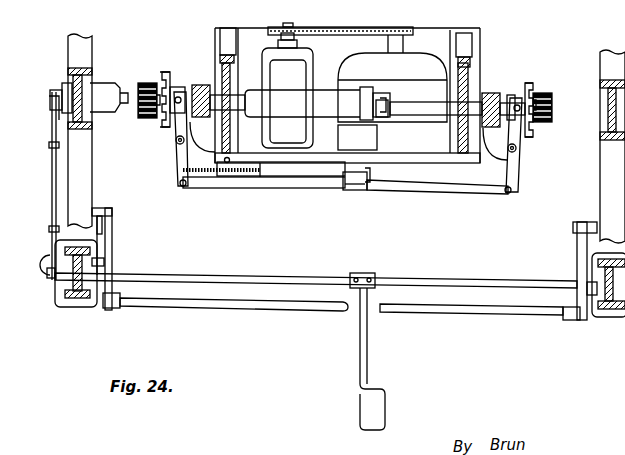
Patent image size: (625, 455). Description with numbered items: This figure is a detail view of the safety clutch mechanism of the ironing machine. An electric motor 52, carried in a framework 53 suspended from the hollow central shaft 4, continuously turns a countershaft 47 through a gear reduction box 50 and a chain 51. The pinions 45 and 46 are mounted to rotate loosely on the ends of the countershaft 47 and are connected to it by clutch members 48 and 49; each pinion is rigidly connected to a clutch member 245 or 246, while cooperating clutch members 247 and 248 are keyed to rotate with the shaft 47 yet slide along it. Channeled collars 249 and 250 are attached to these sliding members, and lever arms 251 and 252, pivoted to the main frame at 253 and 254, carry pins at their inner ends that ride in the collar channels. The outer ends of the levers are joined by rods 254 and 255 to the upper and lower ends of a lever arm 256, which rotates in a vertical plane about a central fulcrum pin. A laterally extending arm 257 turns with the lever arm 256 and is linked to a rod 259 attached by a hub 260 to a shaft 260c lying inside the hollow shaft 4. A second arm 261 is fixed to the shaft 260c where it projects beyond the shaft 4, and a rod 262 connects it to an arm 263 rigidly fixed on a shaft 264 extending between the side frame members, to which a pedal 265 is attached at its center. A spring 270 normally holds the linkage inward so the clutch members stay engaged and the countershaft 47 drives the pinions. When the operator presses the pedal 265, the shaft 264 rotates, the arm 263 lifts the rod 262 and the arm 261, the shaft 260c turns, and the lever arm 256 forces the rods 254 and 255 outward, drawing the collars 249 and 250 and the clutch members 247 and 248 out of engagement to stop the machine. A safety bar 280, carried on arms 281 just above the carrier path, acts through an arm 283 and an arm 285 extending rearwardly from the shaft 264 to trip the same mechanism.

The central shaft 4 is at (322, 100).
The pinion 45 is at (543, 92).
The pinion 46 is at (147, 80).
The countershaft 47 is at (408, 103).
The clutch member 48 is at (535, 132).
The clutch member 49 is at (160, 122).
The gear reduction box 50 is at (287, 90).
The chain 51 is at (358, 30).
The electric motor 52 is at (399, 99).
The framework 53 is at (228, 40).
The clutch member 245 is at (166, 72).
The clutch member 246 is at (528, 82).
The clutch member 247 is at (170, 68).
The clutch member 248 is at (525, 85).
The channeled collar 249 is at (180, 85).
The channeled collar 250 is at (512, 94).
The lever arm 251 is at (177, 160).
The lever arm 252 is at (516, 167).
The pivot 253 is at (176, 140).
The rod 254 is at (517, 148).
The rod 255 is at (455, 194).
The lever arm 256 is at (344, 186).
The laterally extending arm 257 is at (368, 182).
The rod 259 is at (374, 133).
The hub 260 is at (398, 70).
The shaft 260c is at (124, 100).
The second arm 261 is at (58, 133).
The rod 262 is at (56, 152).
The arm 263 is at (62, 278).
The shaft 264 is at (317, 262).
The pedal 265 is at (369, 393).
The spring 270 is at (216, 198).
The bar 280 is at (282, 306).
The arm 281 is at (113, 248).
The arm 283 is at (101, 231).
The arm 285 is at (104, 265).